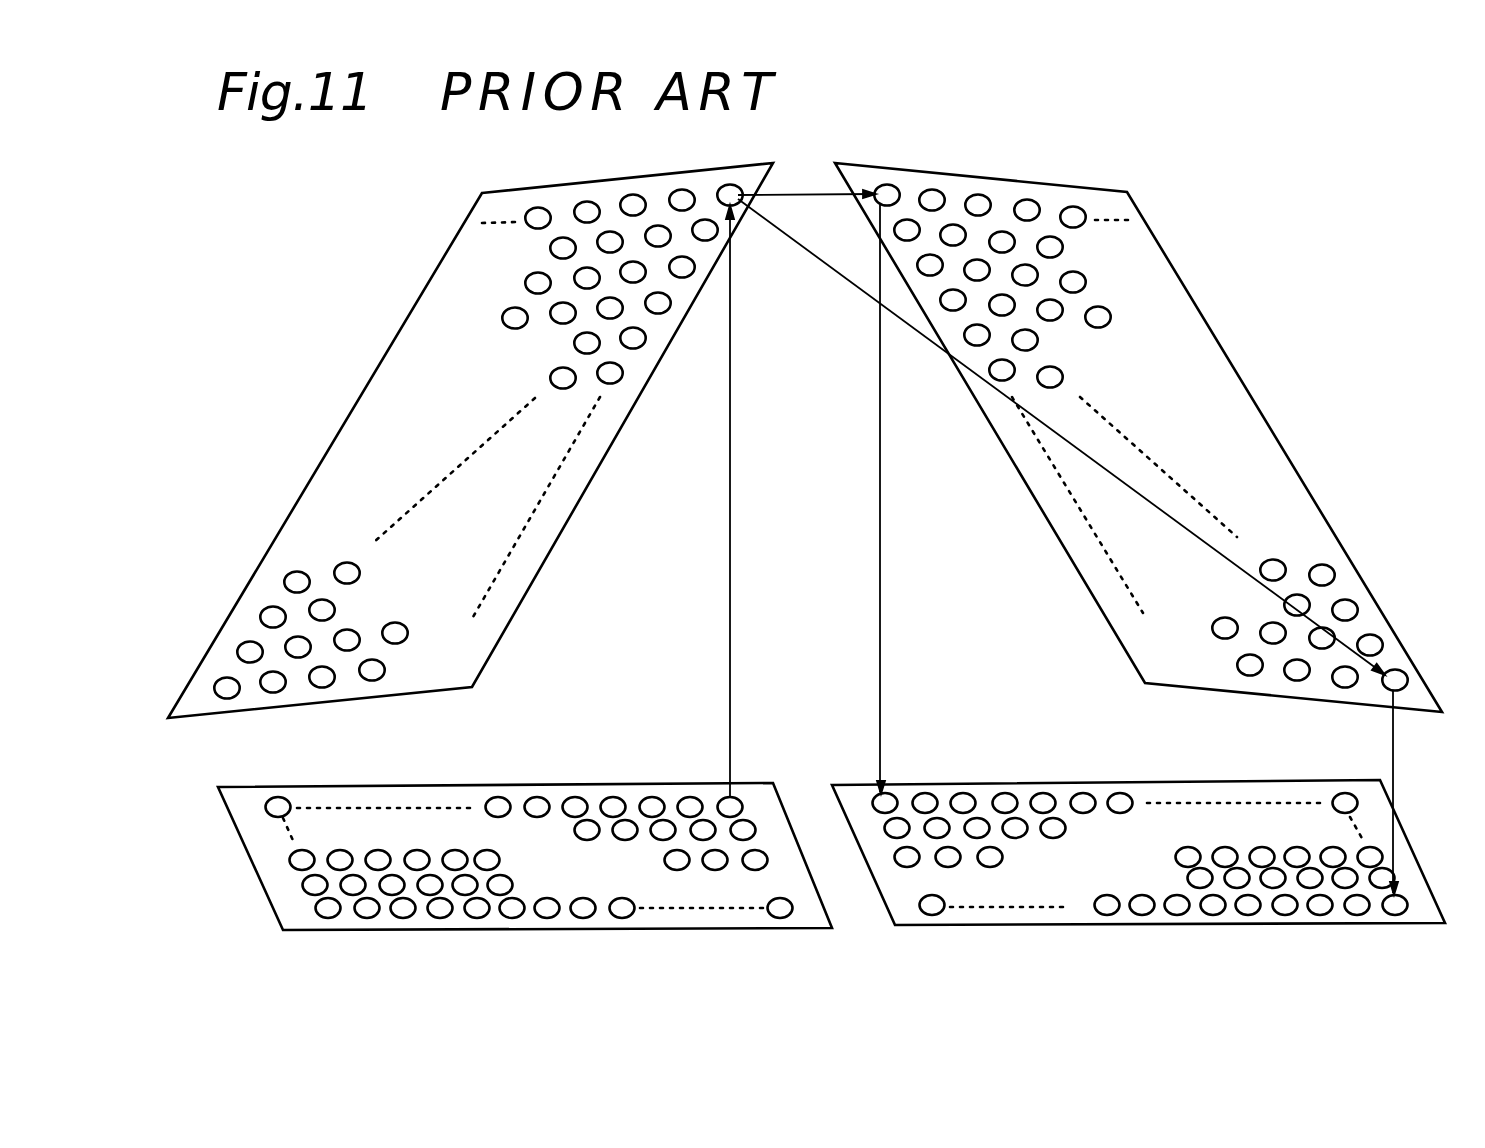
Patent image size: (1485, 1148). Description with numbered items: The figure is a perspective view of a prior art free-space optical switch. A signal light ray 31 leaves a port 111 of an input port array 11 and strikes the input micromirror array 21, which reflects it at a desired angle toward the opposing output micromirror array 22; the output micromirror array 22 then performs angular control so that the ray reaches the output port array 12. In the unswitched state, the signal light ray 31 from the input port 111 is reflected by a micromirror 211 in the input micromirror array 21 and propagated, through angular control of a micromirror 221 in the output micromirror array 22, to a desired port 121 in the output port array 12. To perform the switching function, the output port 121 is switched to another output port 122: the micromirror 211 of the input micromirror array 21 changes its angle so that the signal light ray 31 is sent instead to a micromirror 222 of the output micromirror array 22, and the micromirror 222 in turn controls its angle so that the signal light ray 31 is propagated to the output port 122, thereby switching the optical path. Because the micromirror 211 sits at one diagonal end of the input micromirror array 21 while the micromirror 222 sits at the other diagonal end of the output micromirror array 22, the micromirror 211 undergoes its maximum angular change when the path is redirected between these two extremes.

The input port array 11 is at (573, 930).
The output port array 12 is at (1093, 927).
The input micromirror array 21 is at (425, 290).
The output micromirror array 22 is at (1200, 312).
The signal light ray 31 is at (730, 611).
The input port 111 is at (720, 792).
The output port 121 is at (897, 792).
The output port 122 is at (1407, 895).
The micromirror 211 is at (722, 186).
The micromirror 221 is at (891, 184).
The micromirror 222 is at (1406, 676).